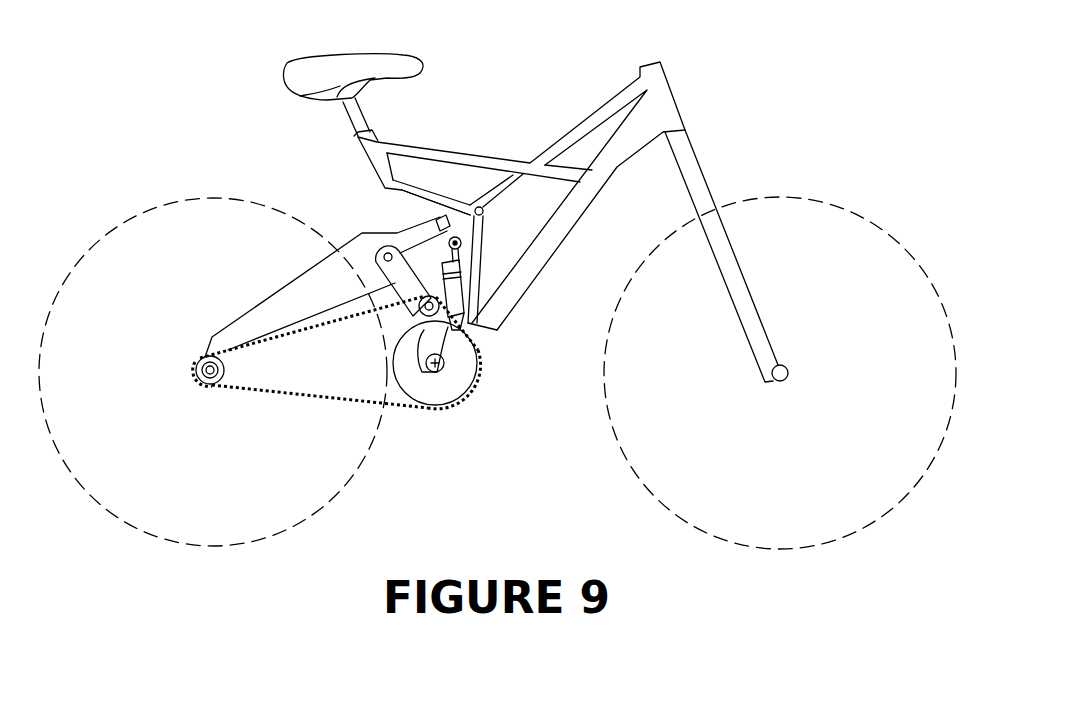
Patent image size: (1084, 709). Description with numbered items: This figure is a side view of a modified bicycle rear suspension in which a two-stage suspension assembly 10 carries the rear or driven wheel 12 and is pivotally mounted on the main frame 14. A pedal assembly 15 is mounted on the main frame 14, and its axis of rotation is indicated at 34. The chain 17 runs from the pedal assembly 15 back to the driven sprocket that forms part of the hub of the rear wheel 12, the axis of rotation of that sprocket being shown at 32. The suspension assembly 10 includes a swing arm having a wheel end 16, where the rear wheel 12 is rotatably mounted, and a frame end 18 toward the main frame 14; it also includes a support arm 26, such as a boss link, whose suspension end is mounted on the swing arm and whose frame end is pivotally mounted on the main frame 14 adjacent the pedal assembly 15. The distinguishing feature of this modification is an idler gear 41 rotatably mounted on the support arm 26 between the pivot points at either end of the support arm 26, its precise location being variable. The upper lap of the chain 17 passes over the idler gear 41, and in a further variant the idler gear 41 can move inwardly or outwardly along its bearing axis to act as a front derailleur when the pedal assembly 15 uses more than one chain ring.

The two-stage suspension assembly 10 is at (246, 63).
The rear wheel 12 is at (232, 197).
The main frame 14 is at (437, 152).
The pedal assembly 15 is at (440, 418).
The wheel end 16 is at (178, 372).
The chain 17 is at (320, 398).
The frame end 18 is at (398, 214).
The support arm 26 is at (390, 282).
The axis of rotation of sprocket 32 is at (203, 362).
The axis of rotation of pedal assembly 34 is at (444, 367).
The idler gear 41 is at (400, 323).